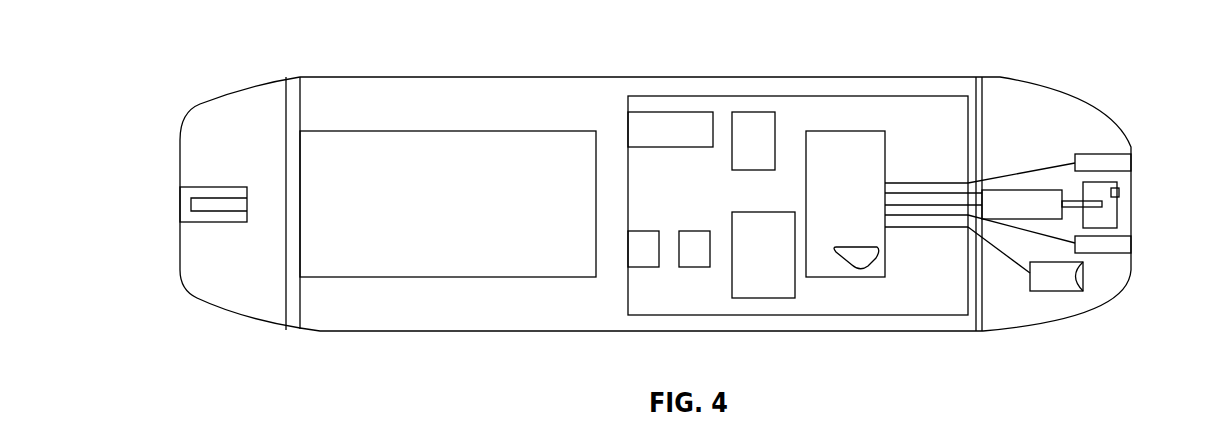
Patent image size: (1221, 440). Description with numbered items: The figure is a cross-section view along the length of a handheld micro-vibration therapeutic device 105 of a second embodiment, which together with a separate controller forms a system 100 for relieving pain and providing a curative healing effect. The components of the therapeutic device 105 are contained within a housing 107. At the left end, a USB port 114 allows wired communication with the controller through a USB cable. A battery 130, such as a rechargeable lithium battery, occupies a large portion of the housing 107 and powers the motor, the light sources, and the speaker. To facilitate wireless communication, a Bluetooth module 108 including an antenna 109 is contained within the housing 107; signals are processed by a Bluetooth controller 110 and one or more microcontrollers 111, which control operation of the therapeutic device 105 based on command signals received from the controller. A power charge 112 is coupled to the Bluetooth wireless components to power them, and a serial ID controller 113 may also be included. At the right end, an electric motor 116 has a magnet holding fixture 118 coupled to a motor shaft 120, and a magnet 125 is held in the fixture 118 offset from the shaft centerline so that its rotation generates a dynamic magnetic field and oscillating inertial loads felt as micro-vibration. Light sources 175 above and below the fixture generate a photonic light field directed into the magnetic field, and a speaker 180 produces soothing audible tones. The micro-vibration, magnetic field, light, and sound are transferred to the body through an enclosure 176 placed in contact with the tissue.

The system 100 is at (214, 66).
The therapeutic device 105 is at (524, 70).
The housing 107 is at (656, 78).
The Bluetooth module 108 is at (851, 140).
The antenna 109 is at (872, 256).
The Bluetooth controller 110 is at (782, 290).
The microcontroller 111 is at (643, 237).
The power charge 112 is at (753, 128).
The serial ID controller 113 is at (688, 127).
The USB port 114 is at (222, 186).
The electric motor 116 is at (1027, 189).
The magnet holding fixture 118 is at (1100, 188).
The motor shaft 120 is at (1075, 198).
The magnet 125 is at (1118, 193).
The battery 130 is at (368, 147).
The light source 175 is at (1120, 165).
The enclosure 176 is at (1027, 330).
The speaker 180 is at (1052, 282).